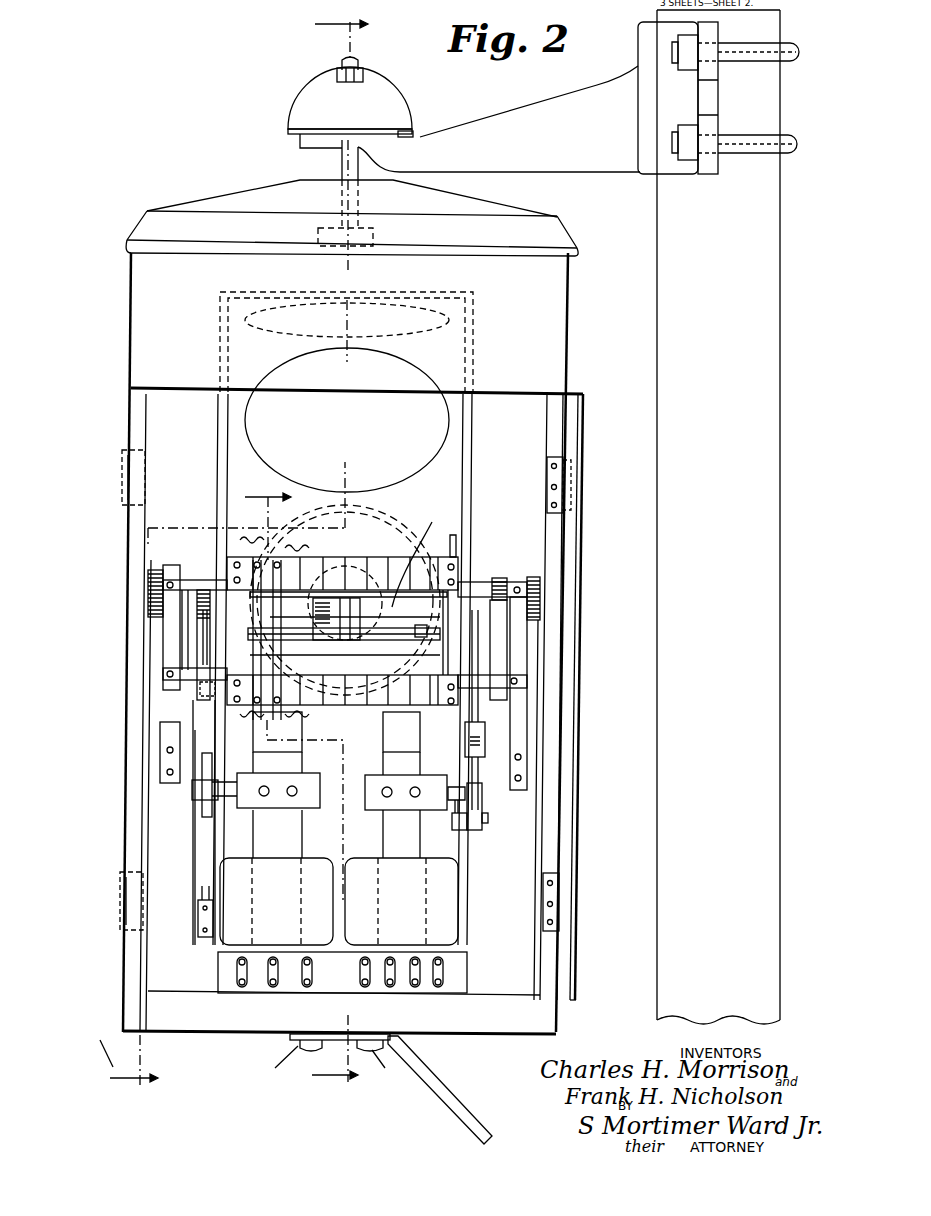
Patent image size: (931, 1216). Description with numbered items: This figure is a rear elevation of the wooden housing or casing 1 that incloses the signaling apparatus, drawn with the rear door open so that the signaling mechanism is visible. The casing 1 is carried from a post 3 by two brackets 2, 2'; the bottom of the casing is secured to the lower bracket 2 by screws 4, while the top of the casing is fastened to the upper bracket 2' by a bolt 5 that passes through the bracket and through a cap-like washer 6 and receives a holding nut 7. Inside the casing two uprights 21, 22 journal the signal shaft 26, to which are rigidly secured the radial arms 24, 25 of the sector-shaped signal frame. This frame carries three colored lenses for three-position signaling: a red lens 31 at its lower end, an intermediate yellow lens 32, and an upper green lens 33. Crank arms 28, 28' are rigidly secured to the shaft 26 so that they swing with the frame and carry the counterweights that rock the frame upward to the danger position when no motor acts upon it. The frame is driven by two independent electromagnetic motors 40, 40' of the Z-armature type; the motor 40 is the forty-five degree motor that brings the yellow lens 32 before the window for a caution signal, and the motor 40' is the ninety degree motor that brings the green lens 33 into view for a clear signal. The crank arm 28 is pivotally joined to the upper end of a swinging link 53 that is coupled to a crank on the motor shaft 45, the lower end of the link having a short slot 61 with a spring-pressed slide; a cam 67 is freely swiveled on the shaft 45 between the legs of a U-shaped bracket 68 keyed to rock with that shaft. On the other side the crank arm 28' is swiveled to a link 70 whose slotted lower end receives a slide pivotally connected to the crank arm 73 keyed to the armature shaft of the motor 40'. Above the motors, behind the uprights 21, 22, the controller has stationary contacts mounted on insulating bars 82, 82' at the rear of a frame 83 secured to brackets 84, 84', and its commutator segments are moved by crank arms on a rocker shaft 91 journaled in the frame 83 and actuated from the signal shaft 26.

The housing or casing 1 is at (234, 555).
The lower bracket 2 is at (440, 1090).
The upper bracket 2' is at (578, 98).
The post 3 is at (748, 517).
The screws 4 is at (318, 788).
The bolt 5 is at (343, 160).
The cap-like washer 6 is at (373, 104).
The holding nut 7 is at (362, 78).
The upright 21 is at (155, 625).
The upright 22 is at (533, 633).
The radial arm 24 is at (218, 478).
The radial arm 25 is at (467, 453).
The shaft 26 is at (419, 555).
The crank arm 28 is at (194, 709).
The crank arm 28' is at (460, 710).
The red lens 31 is at (345, 600).
The yellow lens 32 is at (347, 420).
The green lens 33 is at (347, 320).
The electromagnetic motor 40 is at (196, 922).
The electromagnetic motor 40' is at (483, 922).
The shaft 45 is at (190, 789).
The swinging link 53 is at (205, 717).
The short slot 61 is at (203, 893).
The cam 67 is at (207, 807).
The U-shaped bracket 68 is at (214, 770).
The link 70 is at (484, 772).
The crank arm 73 is at (464, 830).
The insulating bar 82 is at (342, 566).
The insulating bar 82' is at (342, 710).
The frame 83 is at (207, 630).
The bracket 84 is at (157, 640).
The bracket 84' is at (544, 683).
The rocker shaft 91 is at (300, 633).